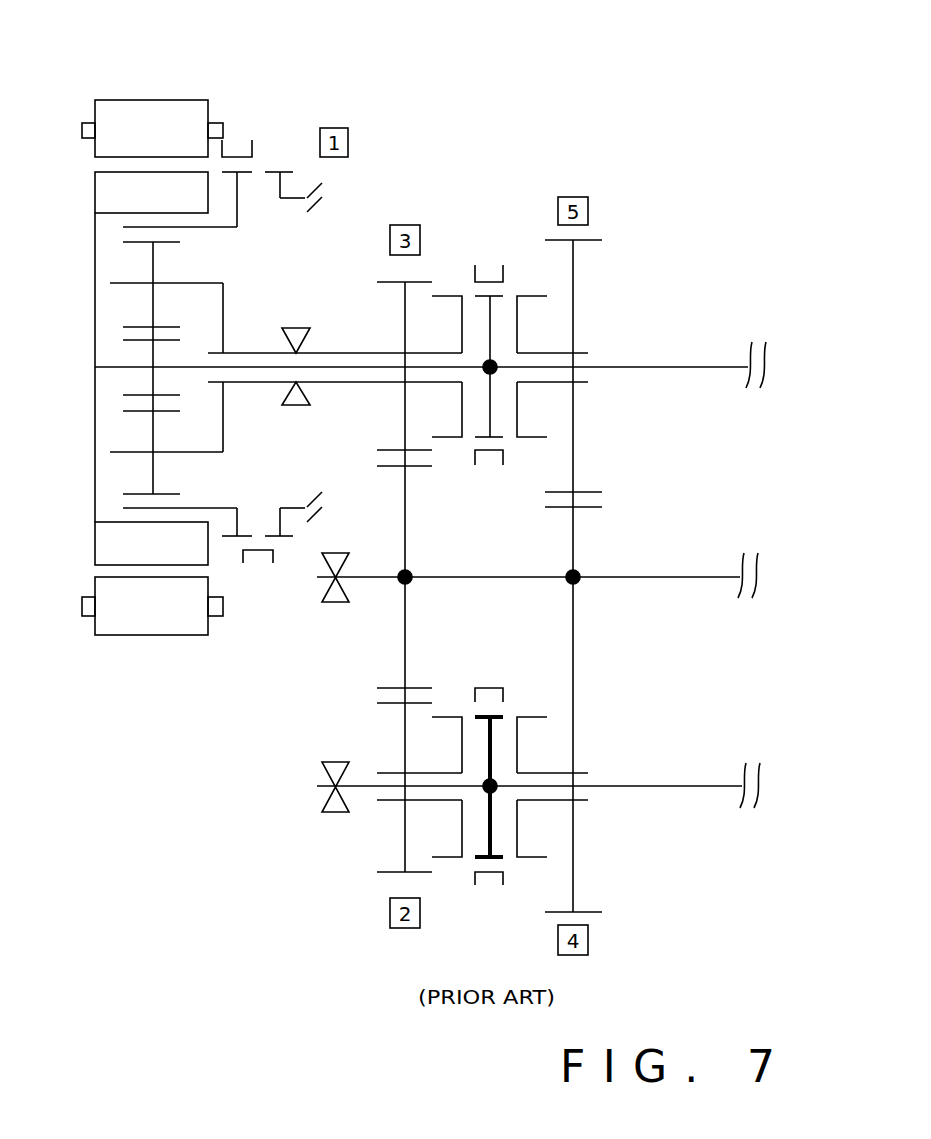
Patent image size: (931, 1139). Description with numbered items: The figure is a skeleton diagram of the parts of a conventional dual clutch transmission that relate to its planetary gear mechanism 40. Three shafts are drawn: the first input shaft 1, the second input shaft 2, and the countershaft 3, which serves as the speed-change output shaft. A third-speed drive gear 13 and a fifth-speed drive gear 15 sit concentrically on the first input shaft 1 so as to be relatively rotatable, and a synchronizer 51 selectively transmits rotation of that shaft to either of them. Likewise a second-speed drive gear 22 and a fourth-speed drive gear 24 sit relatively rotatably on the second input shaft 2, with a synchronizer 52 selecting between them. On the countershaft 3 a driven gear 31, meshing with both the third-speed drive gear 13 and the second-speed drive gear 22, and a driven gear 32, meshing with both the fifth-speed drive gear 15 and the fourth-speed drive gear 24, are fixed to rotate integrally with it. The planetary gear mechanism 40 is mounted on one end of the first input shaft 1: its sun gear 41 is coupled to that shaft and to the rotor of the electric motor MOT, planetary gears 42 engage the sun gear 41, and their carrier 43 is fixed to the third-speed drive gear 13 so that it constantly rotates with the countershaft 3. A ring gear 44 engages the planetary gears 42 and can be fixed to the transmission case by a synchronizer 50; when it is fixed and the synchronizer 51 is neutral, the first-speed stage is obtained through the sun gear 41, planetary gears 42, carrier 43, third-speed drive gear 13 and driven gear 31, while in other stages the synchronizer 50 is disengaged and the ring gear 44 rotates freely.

The electric motor MOT is at (141, 78).
The planetary gear mechanism 40 is at (221, 354).
The sun gear 41 is at (180, 396).
The planetary gears 42 is at (165, 243).
The carrier 43 is at (224, 322).
The ring gear 44 is at (238, 228).
The synchronizer 50 is at (275, 138).
The synchronizer 51 is at (505, 257).
The synchronizer 52 is at (504, 679).
The first input shaft 1 is at (665, 366).
The second input shaft 2 is at (697, 786).
The countershaft 3 is at (672, 577).
The third-speed drive gear 13 is at (418, 282).
The fifth-speed drive gear 15 is at (595, 240).
The second-speed drive gear 22 is at (418, 872).
The fourth-speed drive gear 24 is at (601, 912).
The driven gear 31 is at (418, 466).
The driven gear 32 is at (588, 507).